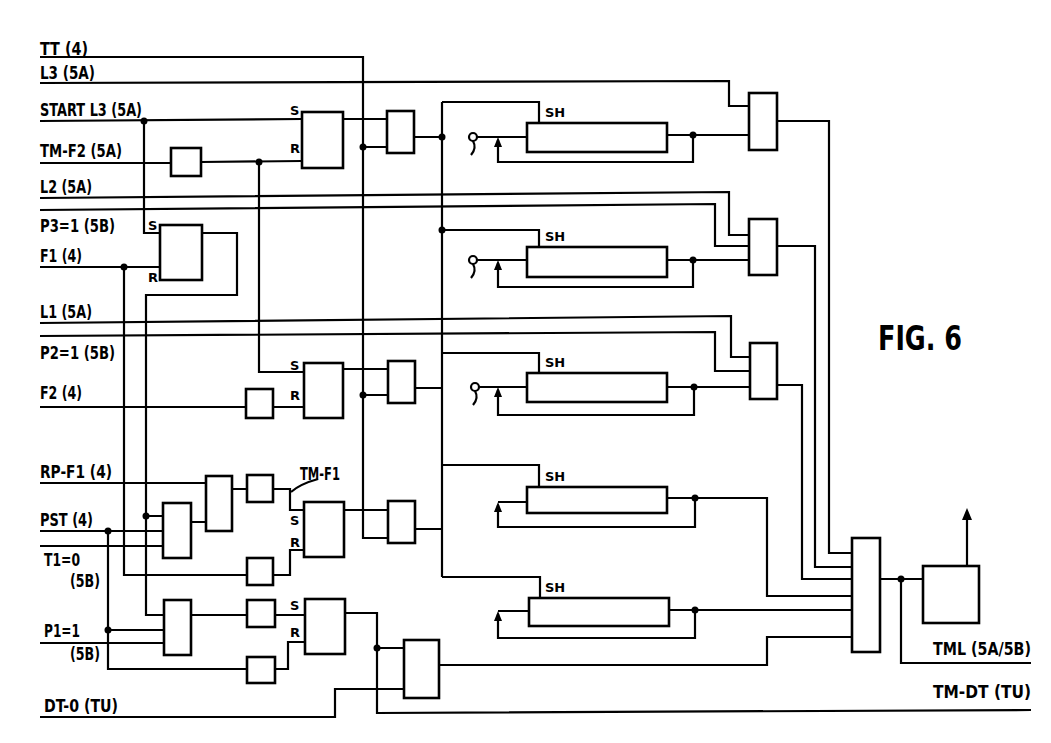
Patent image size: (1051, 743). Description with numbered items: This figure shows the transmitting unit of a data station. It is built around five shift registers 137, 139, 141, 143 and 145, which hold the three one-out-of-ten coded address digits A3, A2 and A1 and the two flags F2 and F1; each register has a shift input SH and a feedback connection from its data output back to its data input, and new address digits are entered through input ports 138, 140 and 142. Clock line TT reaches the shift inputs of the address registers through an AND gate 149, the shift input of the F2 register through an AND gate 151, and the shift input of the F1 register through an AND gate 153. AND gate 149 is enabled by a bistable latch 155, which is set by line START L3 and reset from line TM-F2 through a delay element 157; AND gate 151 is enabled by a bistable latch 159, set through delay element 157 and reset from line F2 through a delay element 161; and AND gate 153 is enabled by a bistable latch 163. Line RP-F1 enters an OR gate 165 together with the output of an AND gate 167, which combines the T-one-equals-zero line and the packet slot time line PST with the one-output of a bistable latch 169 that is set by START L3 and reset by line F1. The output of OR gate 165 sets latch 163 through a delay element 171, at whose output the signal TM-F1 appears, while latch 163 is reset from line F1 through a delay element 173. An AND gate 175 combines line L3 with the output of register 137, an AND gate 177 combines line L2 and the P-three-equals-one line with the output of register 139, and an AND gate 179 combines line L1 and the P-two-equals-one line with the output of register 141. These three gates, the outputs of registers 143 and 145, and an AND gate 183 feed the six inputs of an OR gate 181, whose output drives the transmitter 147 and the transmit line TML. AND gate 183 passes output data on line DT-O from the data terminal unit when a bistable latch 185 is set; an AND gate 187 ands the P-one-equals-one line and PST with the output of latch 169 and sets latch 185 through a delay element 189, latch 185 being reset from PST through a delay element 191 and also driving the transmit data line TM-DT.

The shift register 137 is at (628, 123).
The input port 138 is at (492, 156).
The shift register 139 is at (628, 247).
The input port 140 is at (492, 278).
The shift register 141 is at (630, 373).
The input port 142 is at (493, 406).
The shift register 143 is at (630, 487).
The shift register 145 is at (630, 598).
The transmitter TRM 147 is at (979, 608).
The AND gate 149 is at (395, 153).
The AND gate 151 is at (395, 403).
The AND gate 153 is at (395, 543).
The bistable latch 155 is at (316, 168).
The delay element 157 is at (194, 176).
The bistable latch 159 is at (312, 418).
The delay element 161 is at (273, 412).
The bistable latch 163 is at (313, 557).
The OR gate 165 is at (228, 476).
The AND gate 167 is at (191, 550).
The bistable latch 169 is at (202, 250).
The delay element 171 is at (278, 475).
The delay element 173 is at (278, 558).
The AND gate 175 is at (777, 106).
The AND gate 177 is at (777, 232).
The AND gate 179 is at (777, 357).
The OR gate 181 is at (880, 548).
The AND gate 183 is at (439, 690).
The bistable latch 185 is at (313, 654).
The AND gate 187 is at (191, 650).
The delay element 189 is at (249, 604).
The delay element 191 is at (275, 641).